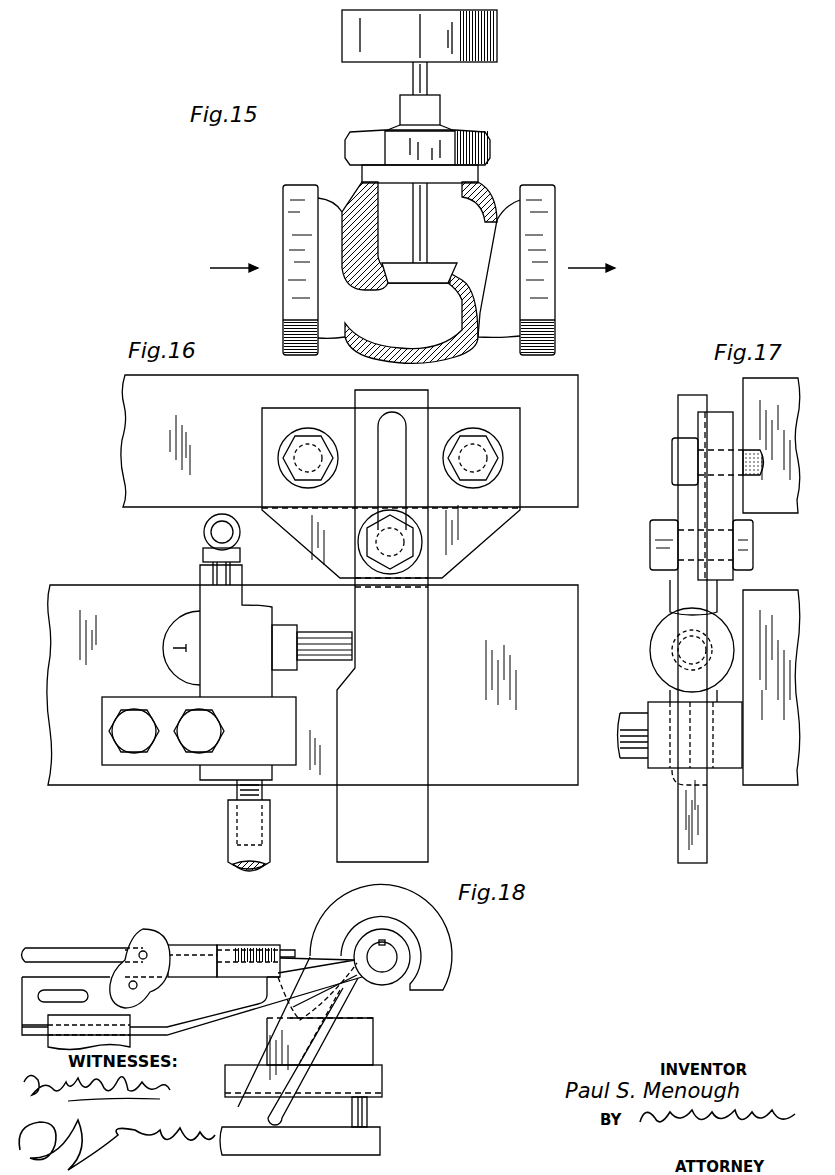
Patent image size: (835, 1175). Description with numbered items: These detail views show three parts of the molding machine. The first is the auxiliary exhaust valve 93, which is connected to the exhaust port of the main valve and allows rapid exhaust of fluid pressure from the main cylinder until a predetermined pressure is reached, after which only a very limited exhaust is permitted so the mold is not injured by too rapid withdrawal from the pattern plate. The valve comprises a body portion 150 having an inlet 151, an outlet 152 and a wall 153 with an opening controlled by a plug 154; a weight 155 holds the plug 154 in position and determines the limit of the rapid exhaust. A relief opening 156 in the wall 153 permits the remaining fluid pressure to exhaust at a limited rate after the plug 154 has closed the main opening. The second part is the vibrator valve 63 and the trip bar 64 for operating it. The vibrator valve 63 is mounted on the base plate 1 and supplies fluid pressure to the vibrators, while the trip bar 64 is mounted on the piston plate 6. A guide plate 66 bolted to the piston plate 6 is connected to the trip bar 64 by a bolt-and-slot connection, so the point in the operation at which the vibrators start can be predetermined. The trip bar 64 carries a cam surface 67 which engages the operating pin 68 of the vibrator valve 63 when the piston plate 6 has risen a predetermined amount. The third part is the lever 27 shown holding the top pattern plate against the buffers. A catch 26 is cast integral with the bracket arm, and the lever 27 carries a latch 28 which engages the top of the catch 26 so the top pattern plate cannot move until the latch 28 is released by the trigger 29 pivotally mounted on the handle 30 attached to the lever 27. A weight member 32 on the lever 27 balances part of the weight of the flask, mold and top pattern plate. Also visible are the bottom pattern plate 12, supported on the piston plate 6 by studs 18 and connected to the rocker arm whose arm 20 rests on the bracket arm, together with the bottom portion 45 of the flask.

In FIG. 15, the weight 155 is at (497, 45).
In FIG. 15, the auxiliary exhaust valve 93 is at (562, 137).
In FIG. 15, the body portion 150 is at (475, 206).
In FIG. 15, the inlet 151 is at (283, 300).
In FIG. 15, the outlet 152 is at (555, 300).
In FIG. 15, the wall 153 is at (372, 244).
In FIG. 15, the plug 154 is at (427, 238).
In FIG. 15, the relief opening 156 is at (462, 303).
In FIG. 16, the piston plate 6 is at (578, 462).
In FIG. 17, the piston plate 6 is at (770, 378).
In FIG. 18, the piston plate 6 is at (380, 1140).
In FIG. 16, the base plate 1 is at (578, 634).
In FIG. 17, the base plate 1 is at (770, 590).
In FIG. 16, the guide plate 66 is at (520, 430).
In FIG. 17, the guide plate 66 is at (707, 496).
In FIG. 16, the trip bar 64 is at (428, 622).
In FIG. 17, the trip bar 64 is at (683, 395).
In FIG. 16, the cam surface 67 is at (345, 680).
In FIG. 16, the vibrator valve 63 is at (178, 672).
In FIG. 17, the vibrator valve 63 is at (652, 660).
In FIG. 16, the operating pin 68 is at (312, 640).
In FIG. 18, the trigger 29 is at (58, 948).
In FIG. 18, the lever 27 is at (175, 978).
In FIG. 18, the latch 28 is at (258, 946).
In FIG. 18, the catch 26 is at (292, 948).
In FIG. 18, the weight member 32 is at (48, 1045).
In FIG. 18, the handle 30 is at (165, 1038).
In FIG. 18, the arm 20 is at (323, 1048).
In FIG. 18, the bottom portion of the flask 45 is at (373, 1048).
In FIG. 18, the bottom pattern plate 12 is at (225, 1084).
In FIG. 18, the studs 18 is at (367, 1110).